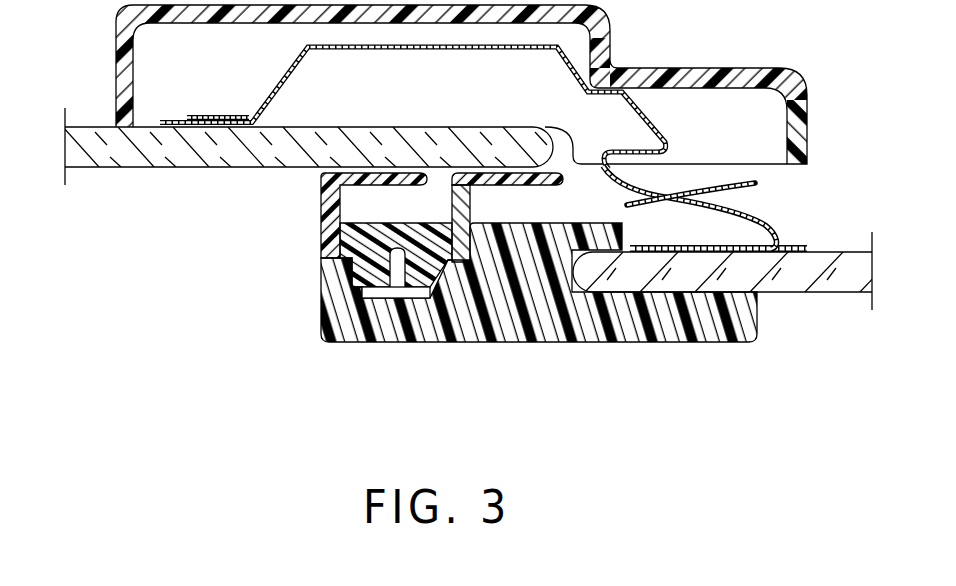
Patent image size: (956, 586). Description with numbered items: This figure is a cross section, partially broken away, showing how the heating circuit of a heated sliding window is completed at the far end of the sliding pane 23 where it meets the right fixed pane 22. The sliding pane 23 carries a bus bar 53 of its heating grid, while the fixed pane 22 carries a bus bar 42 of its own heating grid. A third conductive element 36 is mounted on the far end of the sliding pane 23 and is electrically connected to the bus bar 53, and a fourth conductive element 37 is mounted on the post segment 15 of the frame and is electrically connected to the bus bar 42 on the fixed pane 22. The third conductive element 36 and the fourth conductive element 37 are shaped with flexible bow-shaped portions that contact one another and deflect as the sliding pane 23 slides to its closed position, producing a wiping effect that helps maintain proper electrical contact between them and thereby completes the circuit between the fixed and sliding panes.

The post segment 15 is at (424, 341).
The fixed pane 22 is at (807, 292).
The sliding pane 23 is at (131, 165).
The third conductive element 36 is at (758, 186).
The fourth conductive element 37 is at (624, 205).
The bus bar 42 is at (793, 248).
The bus bar 53 is at (171, 117).